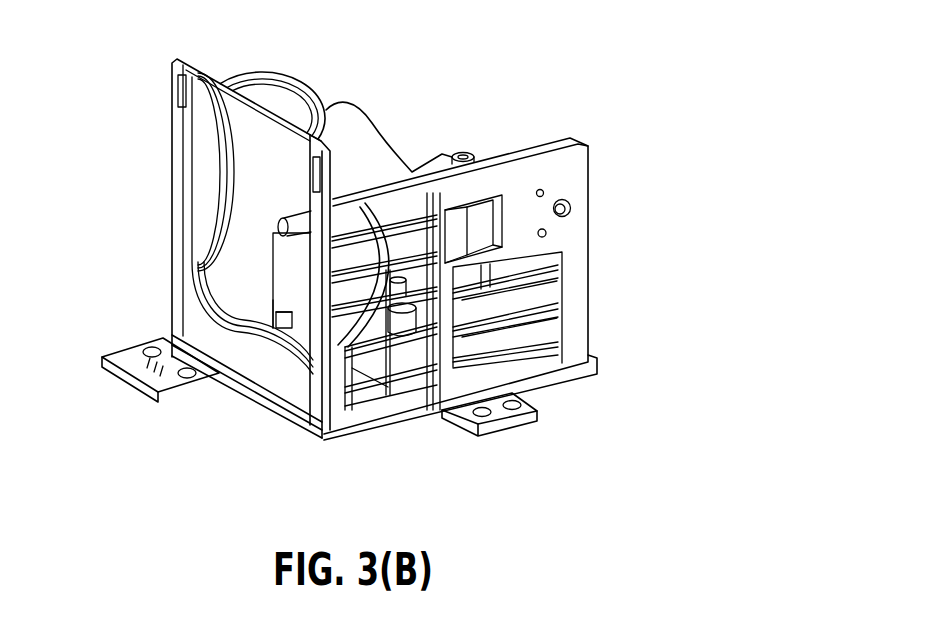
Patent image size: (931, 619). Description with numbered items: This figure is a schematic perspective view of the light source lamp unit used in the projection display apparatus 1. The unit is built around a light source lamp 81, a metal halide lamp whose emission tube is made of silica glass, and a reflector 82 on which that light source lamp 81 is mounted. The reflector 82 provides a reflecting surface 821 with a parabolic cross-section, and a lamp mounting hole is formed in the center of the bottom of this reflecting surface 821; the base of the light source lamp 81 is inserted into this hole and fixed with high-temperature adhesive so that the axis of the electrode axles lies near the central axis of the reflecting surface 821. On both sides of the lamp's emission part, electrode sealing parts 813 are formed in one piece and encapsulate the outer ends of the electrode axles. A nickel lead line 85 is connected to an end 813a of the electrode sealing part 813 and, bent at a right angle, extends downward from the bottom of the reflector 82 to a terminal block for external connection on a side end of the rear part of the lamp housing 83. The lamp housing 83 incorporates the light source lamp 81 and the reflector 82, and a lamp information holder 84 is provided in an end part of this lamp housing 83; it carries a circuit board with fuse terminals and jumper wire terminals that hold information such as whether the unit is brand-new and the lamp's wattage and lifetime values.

The projection display apparatus 1 is at (594, 100).
The light source lamp 81 is at (277, 194).
The reflecting surface 821 is at (233, 137).
The reflector 82 is at (371, 123).
The end of the electrode sealing part 813a is at (277, 227).
The electrode sealing part 813 is at (302, 240).
The nickel lead line 85 is at (272, 292).
The lamp information holder 84 is at (132, 354).
The lamp housing 83 is at (593, 223).